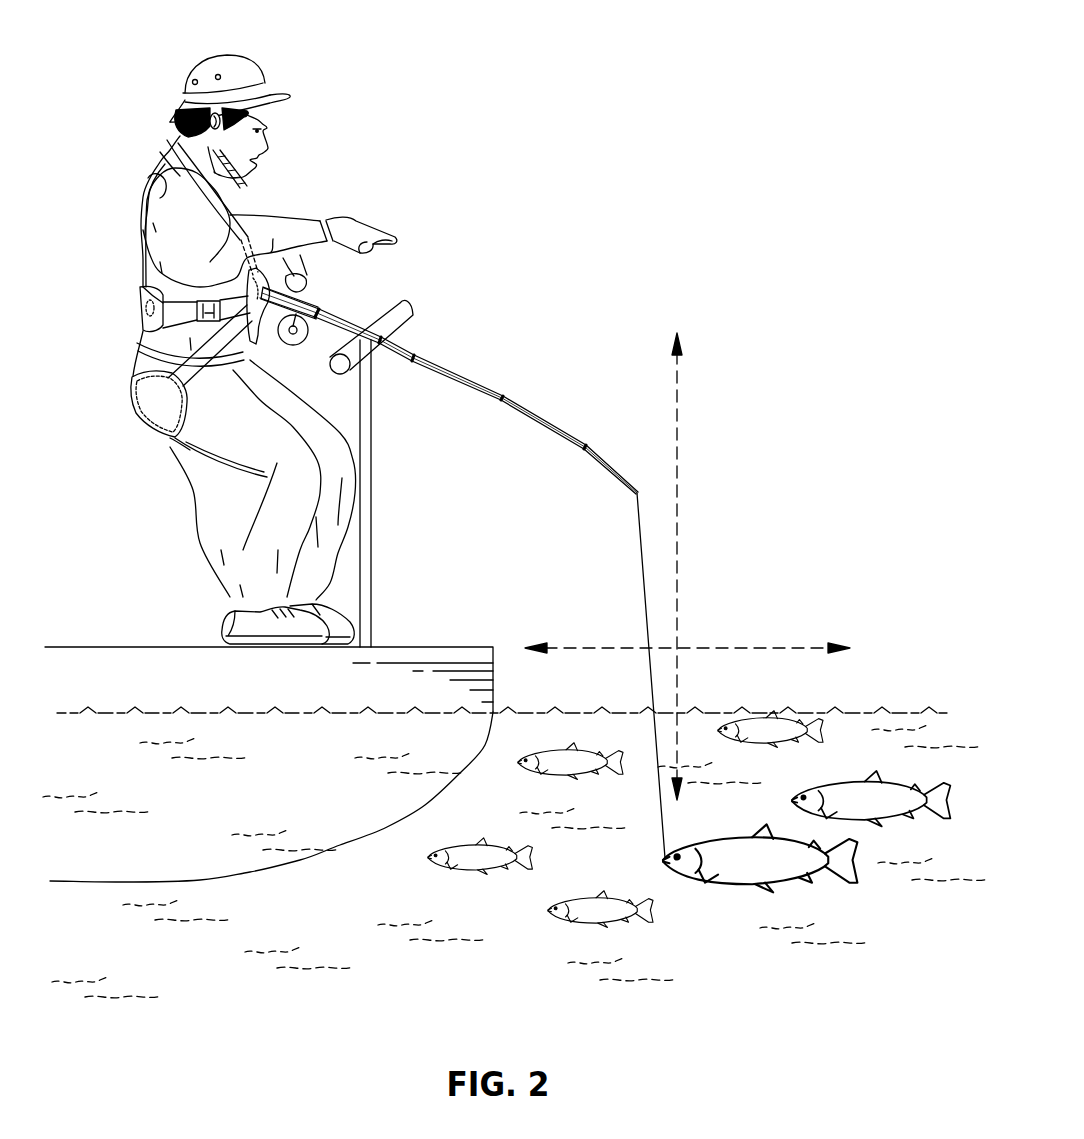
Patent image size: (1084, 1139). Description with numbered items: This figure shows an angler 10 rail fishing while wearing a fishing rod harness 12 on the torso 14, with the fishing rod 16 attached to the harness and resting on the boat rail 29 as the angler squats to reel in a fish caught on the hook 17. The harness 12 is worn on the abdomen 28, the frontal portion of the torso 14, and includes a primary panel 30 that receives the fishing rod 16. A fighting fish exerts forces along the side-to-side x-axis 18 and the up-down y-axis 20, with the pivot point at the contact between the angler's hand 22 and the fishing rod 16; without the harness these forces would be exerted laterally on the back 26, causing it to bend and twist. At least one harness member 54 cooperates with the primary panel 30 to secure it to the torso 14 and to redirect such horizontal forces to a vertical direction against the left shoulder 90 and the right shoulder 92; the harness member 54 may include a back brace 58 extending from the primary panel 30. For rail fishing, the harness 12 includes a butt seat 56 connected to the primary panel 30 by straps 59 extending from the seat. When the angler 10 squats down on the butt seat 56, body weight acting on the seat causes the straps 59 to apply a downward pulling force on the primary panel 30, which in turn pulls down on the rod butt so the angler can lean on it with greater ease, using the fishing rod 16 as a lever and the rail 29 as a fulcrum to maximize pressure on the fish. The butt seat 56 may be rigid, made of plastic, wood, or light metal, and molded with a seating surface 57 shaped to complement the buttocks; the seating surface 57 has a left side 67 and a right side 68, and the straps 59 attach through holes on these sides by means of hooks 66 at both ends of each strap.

The angler 10 is at (355, 83).
The fishing rod harness 12 is at (263, 338).
The torso 14 is at (242, 210).
The fishing rod 16 is at (465, 372).
The hook 17 is at (668, 855).
The x-axis 18 is at (775, 648).
The y-axis 20 is at (677, 378).
The hand 22 is at (300, 283).
The back 26 is at (158, 162).
The abdomen 28 is at (268, 304).
The rail 29 is at (407, 305).
The primary panel 30 is at (300, 313).
The harness member 54 is at (150, 181).
The butt seat 56 is at (148, 413).
The seating surface 57 is at (132, 377).
The back brace 58 is at (140, 295).
The straps 59 is at (205, 450).
The hooks 66 is at (225, 442).
The left side 67 is at (170, 417).
The right side 68 is at (175, 437).
The left shoulder 90 is at (170, 167).
The right shoulder 92 is at (243, 182).